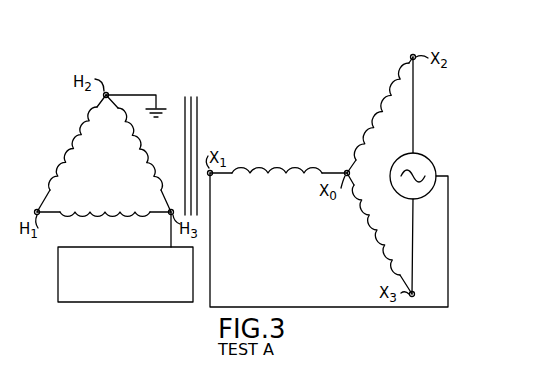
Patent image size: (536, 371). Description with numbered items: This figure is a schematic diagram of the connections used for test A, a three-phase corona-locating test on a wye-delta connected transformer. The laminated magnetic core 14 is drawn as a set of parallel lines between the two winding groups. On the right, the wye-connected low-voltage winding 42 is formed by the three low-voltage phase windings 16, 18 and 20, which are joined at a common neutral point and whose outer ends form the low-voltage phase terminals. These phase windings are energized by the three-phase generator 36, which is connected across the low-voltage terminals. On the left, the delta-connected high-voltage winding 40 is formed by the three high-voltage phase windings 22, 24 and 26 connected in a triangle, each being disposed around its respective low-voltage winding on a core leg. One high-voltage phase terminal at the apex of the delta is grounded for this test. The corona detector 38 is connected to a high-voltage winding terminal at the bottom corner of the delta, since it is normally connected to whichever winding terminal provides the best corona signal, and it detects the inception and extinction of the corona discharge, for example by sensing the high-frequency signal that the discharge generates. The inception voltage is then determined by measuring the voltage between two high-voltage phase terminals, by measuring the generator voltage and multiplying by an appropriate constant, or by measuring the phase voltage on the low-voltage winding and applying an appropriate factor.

The three-phase laminated magnetic core 14 is at (197, 113).
The low-voltage winding 16 is at (273, 168).
The low-voltage winding 18 is at (372, 118).
The low-voltage winding 20 is at (372, 243).
The high-voltage winding 22 is at (116, 217).
The high-voltage winding 24 is at (72, 142).
The high-voltage winding 26 is at (148, 159).
The three-phase generator 36 is at (425, 156).
The corona detector 38 is at (58, 281).
The high-voltage winding 40 is at (104, 167).
The low-voltage winding 42 is at (311, 175).